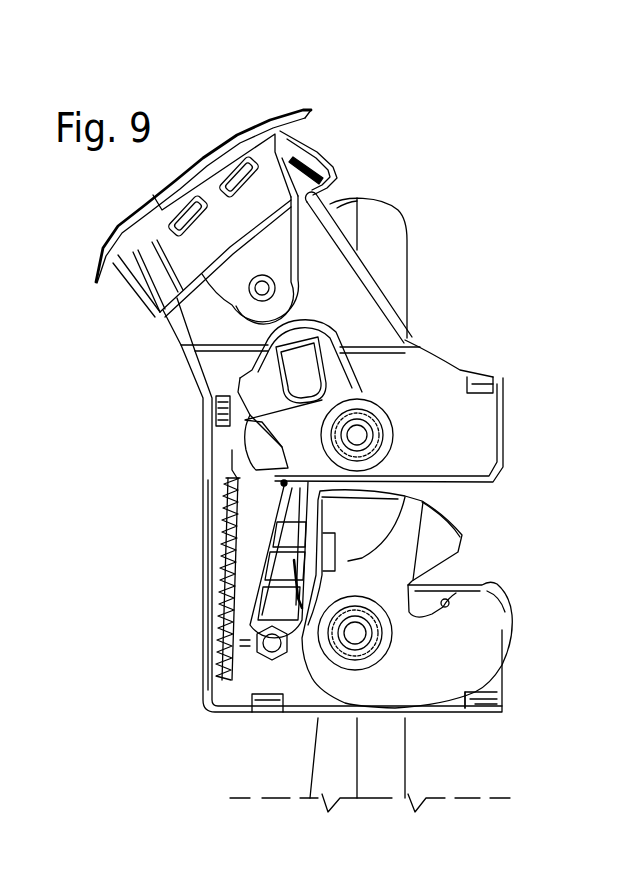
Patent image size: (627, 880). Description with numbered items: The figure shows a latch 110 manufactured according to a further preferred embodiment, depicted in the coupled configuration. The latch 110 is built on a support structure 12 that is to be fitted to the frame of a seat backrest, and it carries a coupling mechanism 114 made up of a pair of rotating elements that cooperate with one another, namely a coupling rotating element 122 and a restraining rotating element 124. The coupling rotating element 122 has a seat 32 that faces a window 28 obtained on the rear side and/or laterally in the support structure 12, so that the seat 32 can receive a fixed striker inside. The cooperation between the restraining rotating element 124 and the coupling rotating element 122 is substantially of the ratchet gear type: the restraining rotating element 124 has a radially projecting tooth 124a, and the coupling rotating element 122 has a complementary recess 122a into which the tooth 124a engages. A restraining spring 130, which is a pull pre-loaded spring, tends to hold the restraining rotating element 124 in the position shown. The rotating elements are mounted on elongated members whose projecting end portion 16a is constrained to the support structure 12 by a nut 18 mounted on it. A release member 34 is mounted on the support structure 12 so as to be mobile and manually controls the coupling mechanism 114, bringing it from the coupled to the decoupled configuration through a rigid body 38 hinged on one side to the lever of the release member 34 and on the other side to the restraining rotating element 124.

The latch 110 is at (345, 147).
The support structure 12 is at (393, 210).
The release member 34 is at (299, 240).
The restraining rotating element 124 is at (345, 365).
The nut 18 is at (372, 428).
The portion of the elongated member 16a is at (352, 440).
The window 28 is at (495, 480).
The rigid body 38 is at (220, 400).
The coupling mechanism 114 is at (293, 595).
The restraining spring 130 is at (205, 613).
The tooth 124a is at (292, 575).
The coupling rotating element 122 is at (512, 633).
The recess 122a is at (461, 538).
The seat 32 is at (447, 606).